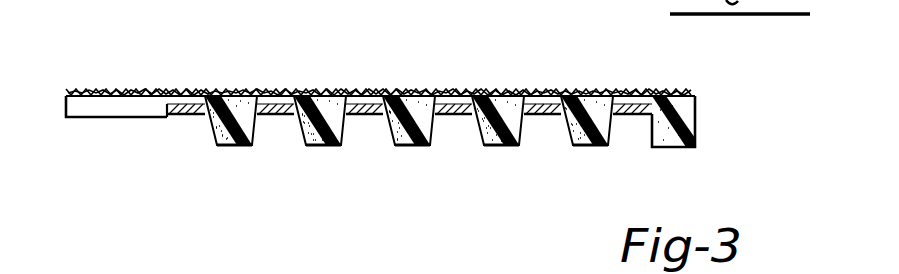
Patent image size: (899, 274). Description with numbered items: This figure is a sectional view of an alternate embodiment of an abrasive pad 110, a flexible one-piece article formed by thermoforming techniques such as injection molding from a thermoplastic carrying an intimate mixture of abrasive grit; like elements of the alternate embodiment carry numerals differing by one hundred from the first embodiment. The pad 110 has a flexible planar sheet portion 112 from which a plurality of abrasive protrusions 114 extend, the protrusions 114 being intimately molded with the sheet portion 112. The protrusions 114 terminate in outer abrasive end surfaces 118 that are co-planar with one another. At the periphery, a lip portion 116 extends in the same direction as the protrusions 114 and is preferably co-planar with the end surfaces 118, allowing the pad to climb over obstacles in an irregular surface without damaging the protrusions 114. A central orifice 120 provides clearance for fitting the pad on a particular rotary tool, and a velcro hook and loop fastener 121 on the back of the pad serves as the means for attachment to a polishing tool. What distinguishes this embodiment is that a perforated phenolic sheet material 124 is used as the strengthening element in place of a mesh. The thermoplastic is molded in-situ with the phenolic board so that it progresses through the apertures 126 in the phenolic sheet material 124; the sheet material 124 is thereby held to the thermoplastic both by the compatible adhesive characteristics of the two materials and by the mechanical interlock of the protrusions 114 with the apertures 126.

The abrasive pad 110 is at (98, 50).
The flexible planar sheet portion 112 is at (646, 92).
The abrasive protrusions 114 is at (255, 125).
The peripheral lip portion 116 is at (682, 148).
The outer abrasive end surfaces 118 is at (224, 146).
The central orifice 120 is at (160, 101).
The velcro hook and loop fastener 121 is at (180, 95).
The perforated phenolic sheet material 124 is at (643, 120).
The apertures 126 is at (257, 108).